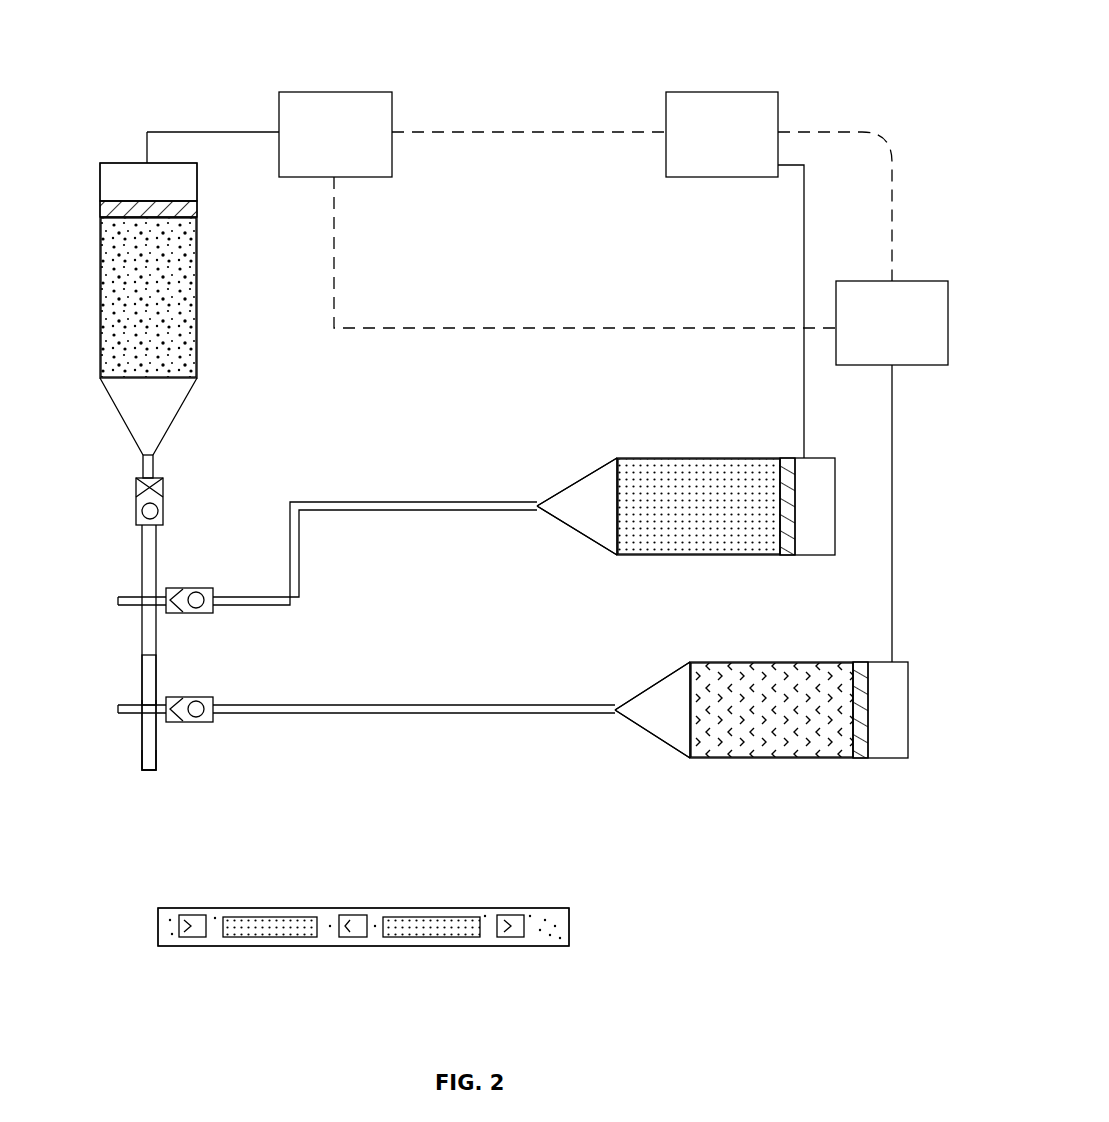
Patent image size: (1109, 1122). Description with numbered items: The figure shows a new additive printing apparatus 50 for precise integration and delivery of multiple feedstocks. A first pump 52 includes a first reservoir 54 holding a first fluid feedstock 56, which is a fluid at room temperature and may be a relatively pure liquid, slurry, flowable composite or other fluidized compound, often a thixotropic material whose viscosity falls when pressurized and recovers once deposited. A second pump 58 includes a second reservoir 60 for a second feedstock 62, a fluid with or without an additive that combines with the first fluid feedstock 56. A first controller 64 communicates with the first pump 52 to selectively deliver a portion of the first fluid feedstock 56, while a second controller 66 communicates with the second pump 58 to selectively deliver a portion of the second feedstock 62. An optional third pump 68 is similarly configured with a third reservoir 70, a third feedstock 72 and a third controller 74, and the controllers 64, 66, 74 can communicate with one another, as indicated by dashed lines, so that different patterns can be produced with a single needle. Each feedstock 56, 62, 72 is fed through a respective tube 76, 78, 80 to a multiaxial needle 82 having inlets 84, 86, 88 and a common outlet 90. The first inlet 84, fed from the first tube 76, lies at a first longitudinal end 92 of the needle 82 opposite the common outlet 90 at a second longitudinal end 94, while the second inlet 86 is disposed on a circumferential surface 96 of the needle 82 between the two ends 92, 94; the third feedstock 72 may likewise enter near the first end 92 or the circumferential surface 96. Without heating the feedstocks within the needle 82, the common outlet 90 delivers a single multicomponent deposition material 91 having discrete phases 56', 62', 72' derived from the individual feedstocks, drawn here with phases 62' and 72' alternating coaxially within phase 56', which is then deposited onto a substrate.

The apparatus 50 is at (918, 106).
The first pump 52 is at (85, 290).
The first reservoir 54 is at (202, 290).
The first fluid feedstock 56 is at (148, 297).
The second pump 58 is at (710, 440).
The second reservoir 60 is at (677, 560).
The second feedstock 62 is at (699, 506).
The first controller 64 is at (365, 92).
The second controller 66 is at (750, 92).
The third pump 68 is at (785, 645).
The third reservoir 70 is at (752, 762).
The third feedstock 72 is at (772, 710).
The third controller 74 is at (906, 281).
The tube 76 is at (140, 468).
The tube 78 is at (373, 500).
The tube 80 is at (448, 705).
The multiaxial needle 82 is at (136, 566).
The first inlet 84 is at (157, 470).
The second inlet 86 is at (165, 596).
The inlet 88 is at (166, 706).
The common outlet 90 is at (150, 772).
The multicomponent deposition material 91 is at (343, 856).
The first longitudinal end 92 is at (137, 480).
The second longitudinal end 94 is at (125, 740).
The circumferential surface 96 is at (140, 700).
The discrete phase 56' is at (394, 901).
The discrete phase 62' is at (351, 967).
The discrete phase 72' is at (351, 888).